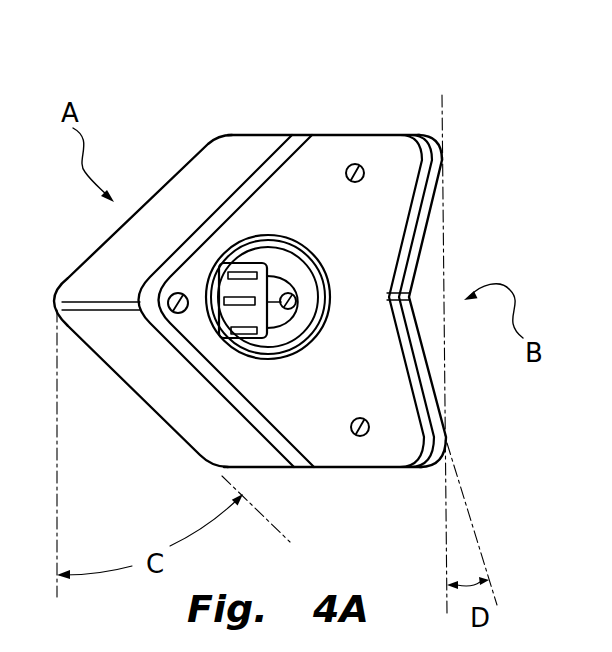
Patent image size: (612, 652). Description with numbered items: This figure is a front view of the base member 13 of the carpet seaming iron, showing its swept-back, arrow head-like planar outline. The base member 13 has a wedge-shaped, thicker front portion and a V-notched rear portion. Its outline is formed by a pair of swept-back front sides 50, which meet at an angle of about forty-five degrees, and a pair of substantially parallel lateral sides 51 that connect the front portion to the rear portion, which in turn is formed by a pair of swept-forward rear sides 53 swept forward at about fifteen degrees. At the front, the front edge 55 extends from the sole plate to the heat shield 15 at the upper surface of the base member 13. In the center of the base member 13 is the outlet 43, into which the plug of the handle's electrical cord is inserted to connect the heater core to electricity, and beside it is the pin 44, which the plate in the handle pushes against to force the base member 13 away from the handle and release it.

The base member 13 is at (331, 448).
The heat shield 15 is at (383, 134).
The outlet 43 is at (265, 268).
The pin 44 is at (297, 300).
The swept-back front sides 50 is at (186, 166).
The lateral sides 51 is at (262, 134).
The swept-forward rear sides 53 is at (428, 222).
The front edge 55 is at (98, 307).